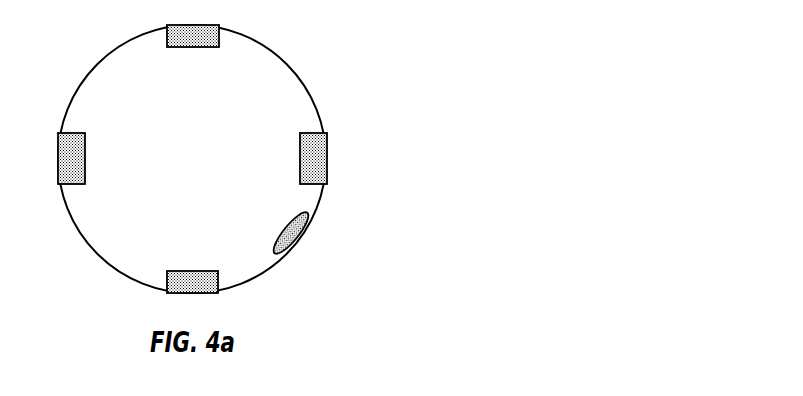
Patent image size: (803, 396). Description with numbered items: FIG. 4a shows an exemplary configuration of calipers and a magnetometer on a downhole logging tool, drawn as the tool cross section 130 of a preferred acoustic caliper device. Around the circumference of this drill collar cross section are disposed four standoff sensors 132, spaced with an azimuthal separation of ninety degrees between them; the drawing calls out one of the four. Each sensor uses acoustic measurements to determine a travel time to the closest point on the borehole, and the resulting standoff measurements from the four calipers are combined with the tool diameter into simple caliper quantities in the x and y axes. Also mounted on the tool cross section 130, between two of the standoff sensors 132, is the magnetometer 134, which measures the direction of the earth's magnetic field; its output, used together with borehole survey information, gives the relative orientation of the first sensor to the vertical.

The tool cross section 130 is at (302, 55).
The standoff sensors 132 is at (341, 132).
The magnetometer 134 is at (316, 227).